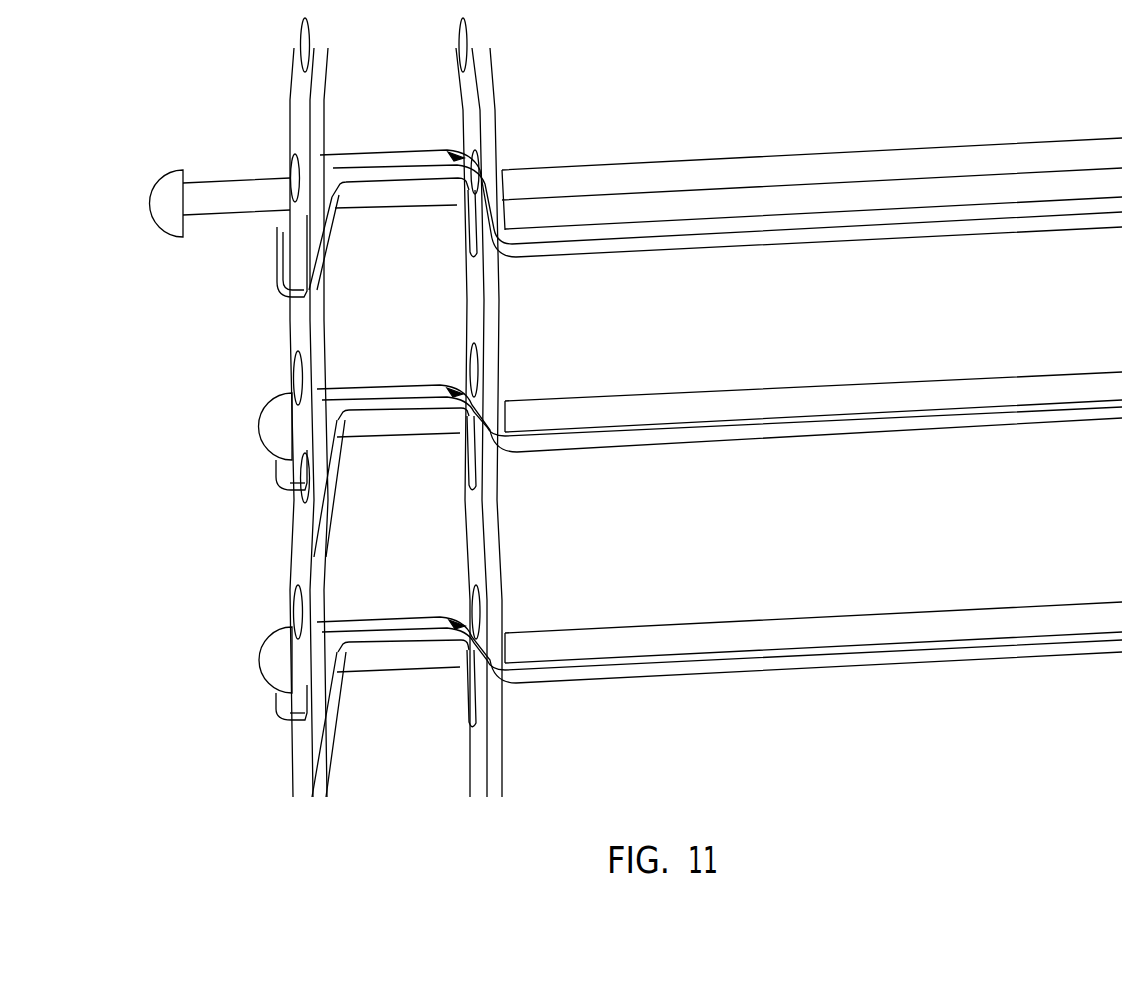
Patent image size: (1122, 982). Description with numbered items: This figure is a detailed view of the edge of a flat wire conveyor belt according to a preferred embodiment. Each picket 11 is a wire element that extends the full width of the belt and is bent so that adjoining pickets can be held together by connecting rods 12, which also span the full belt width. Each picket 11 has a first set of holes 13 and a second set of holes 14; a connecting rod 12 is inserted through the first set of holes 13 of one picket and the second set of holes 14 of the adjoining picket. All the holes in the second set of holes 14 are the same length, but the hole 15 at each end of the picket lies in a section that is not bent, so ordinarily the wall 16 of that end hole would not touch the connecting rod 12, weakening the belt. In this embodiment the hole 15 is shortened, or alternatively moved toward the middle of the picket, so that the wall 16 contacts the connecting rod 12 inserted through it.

The picket 11 is at (548, 260).
The connecting rod 12 is at (605, 152).
The first set of holes 13 is at (438, 237).
The second set of holes 14 is at (453, 360).
The hole 15 is at (268, 224).
The wall of the hole 16 is at (285, 252).